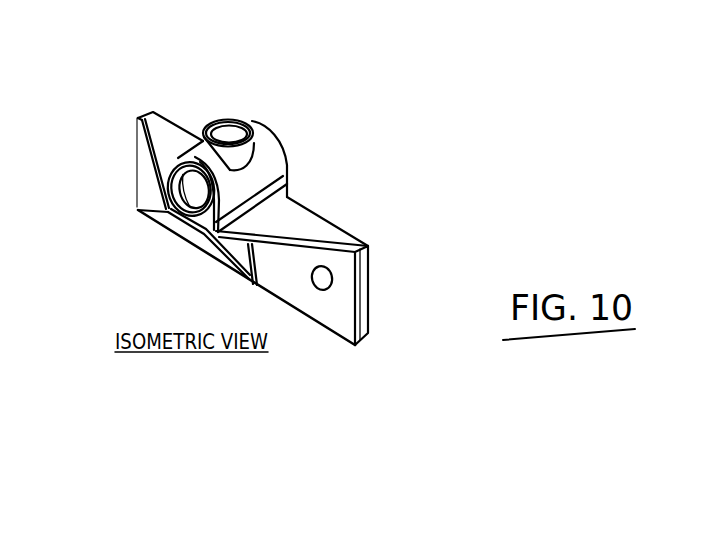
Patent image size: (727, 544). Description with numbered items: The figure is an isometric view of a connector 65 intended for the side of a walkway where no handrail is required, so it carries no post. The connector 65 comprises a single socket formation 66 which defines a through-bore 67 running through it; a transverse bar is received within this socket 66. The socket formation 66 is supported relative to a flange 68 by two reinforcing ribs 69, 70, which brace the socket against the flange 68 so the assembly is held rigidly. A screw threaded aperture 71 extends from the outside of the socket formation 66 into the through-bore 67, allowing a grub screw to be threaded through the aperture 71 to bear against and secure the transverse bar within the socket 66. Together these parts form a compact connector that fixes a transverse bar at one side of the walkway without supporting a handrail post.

The connector 65 is at (379, 149).
The socket formation 66 is at (273, 152).
The through-bore 67 is at (181, 197).
The flange 68 is at (365, 305).
The reinforcing rib 69 is at (297, 225).
The reinforcing rib 70 is at (231, 264).
The screw threaded aperture 71 is at (190, 83).